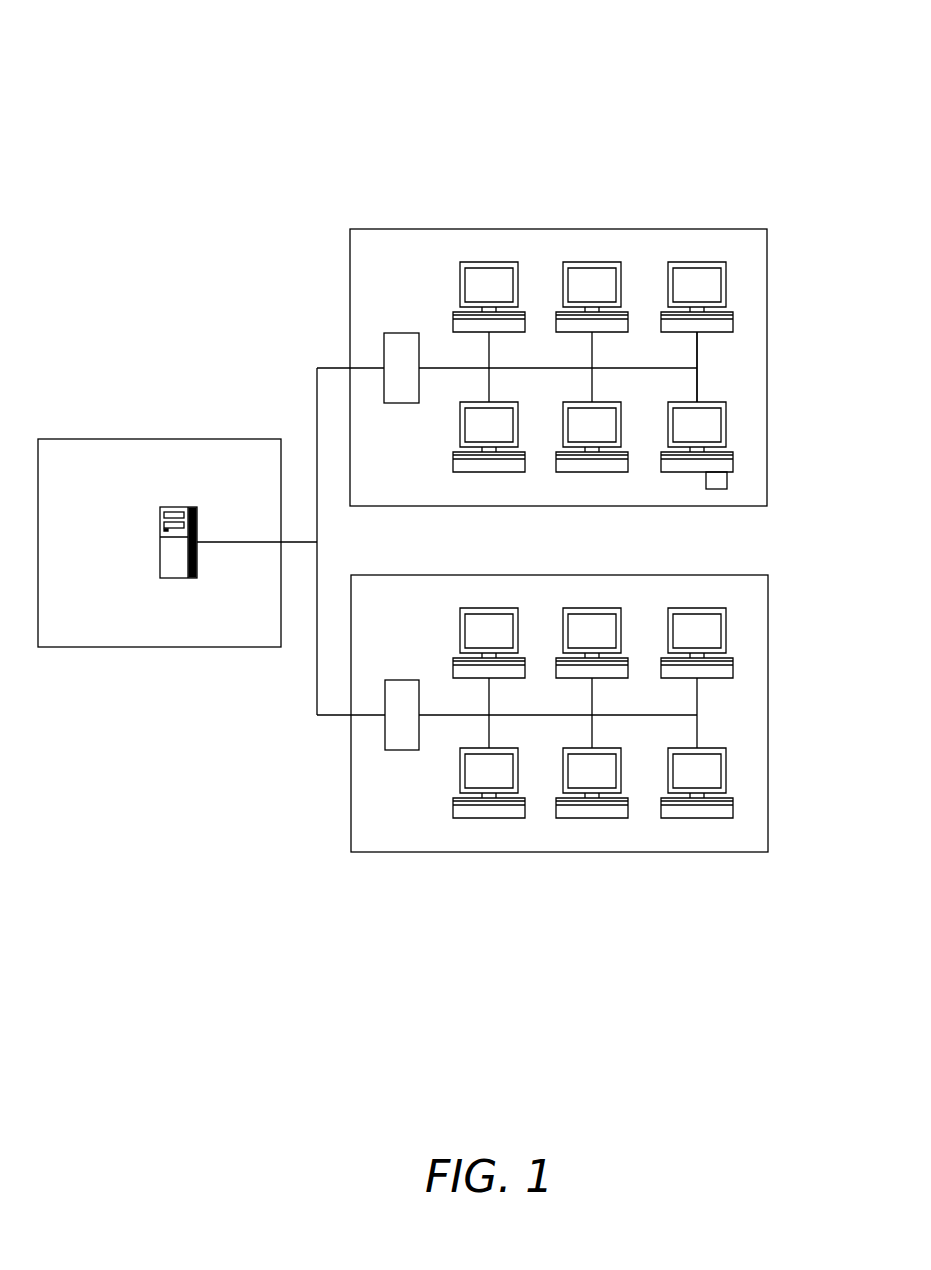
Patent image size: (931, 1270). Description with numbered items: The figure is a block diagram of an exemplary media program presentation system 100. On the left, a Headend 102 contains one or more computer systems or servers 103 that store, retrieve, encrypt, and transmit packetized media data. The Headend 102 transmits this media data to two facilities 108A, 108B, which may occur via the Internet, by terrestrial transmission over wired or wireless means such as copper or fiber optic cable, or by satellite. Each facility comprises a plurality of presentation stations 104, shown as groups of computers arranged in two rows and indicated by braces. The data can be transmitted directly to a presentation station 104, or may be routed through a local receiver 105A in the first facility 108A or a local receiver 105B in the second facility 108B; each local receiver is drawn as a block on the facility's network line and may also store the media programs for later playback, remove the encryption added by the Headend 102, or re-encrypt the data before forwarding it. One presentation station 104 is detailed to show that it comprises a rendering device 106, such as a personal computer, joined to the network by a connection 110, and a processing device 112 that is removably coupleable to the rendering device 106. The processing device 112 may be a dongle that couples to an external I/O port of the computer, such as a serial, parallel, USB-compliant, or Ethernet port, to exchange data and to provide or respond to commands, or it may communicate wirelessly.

The media program presentation system 100 is at (742, 96).
The Headend 102 is at (197, 438).
The server 103 is at (198, 526).
The presentation station 104 is at (832, 207).
The local receiver 105A is at (399, 333).
The local receiver 105B is at (403, 680).
The rendering device 106 is at (735, 459).
The facility 108A is at (768, 248).
The facility 108B is at (770, 606).
The network connection 110 is at (700, 382).
The processing device 112 is at (714, 490).